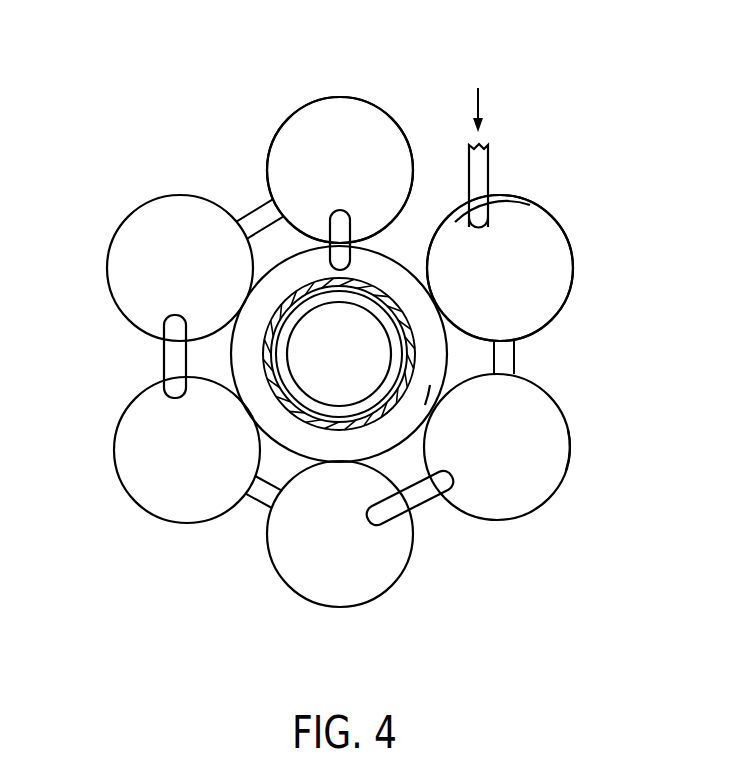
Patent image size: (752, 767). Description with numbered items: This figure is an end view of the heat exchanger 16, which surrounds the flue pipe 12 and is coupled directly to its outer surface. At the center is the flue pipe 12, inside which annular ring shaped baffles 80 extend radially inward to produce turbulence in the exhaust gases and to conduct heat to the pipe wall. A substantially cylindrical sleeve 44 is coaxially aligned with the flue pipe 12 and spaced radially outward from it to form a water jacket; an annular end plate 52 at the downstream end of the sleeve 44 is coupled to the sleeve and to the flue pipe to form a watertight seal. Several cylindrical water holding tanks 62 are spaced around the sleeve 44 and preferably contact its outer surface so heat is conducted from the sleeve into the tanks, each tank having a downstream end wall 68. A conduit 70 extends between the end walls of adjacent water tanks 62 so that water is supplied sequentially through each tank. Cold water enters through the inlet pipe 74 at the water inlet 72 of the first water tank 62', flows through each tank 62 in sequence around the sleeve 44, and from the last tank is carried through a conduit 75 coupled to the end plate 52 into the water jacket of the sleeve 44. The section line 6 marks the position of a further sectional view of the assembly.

The section line 6- 6 is at (338, 58).
The flue pipe 12 is at (300, 290).
The heat exchanger 16 is at (630, 318).
The sleeve 44 is at (392, 256).
The end plate 52 is at (436, 397).
The water holding tank 62 is at (340, 352).
The first water tank 62' is at (541, 268).
The downstream end wall 68 is at (566, 452).
The conduit 70 is at (256, 208).
The water inlet 72 is at (490, 207).
The inlet pipe 74 is at (490, 162).
The conduit 75 is at (336, 214).
The baffle 80 is at (340, 405).